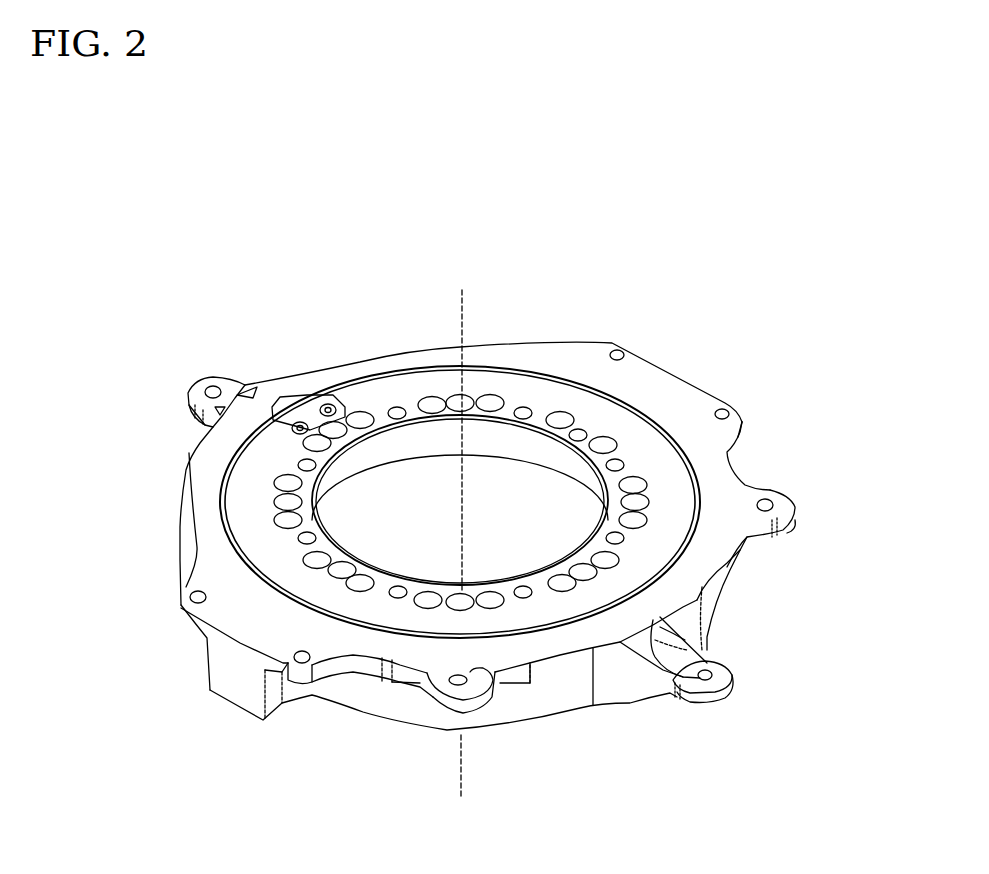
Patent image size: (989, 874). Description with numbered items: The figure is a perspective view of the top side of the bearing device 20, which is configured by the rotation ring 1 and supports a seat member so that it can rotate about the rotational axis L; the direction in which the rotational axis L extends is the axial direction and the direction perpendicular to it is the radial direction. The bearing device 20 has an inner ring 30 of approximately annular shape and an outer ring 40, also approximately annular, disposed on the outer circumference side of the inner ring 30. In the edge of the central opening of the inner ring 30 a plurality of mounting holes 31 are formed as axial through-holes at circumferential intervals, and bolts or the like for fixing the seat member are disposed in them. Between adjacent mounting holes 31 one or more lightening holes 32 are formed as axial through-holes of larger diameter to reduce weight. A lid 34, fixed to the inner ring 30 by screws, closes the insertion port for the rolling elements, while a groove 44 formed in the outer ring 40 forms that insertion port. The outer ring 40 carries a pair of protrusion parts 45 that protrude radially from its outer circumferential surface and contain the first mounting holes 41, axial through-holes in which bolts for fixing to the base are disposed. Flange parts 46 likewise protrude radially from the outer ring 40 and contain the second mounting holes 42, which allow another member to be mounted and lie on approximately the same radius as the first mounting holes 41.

The rotation ring 1 is at (262, 233).
The bearing device 20 is at (404, 312).
The rotational axis L is at (462, 313).
The inner ring 30 is at (523, 370).
The mounting holes 31 is at (578, 433).
The lightening holes 32 is at (602, 445).
The lid 34 is at (299, 395).
The outer ring 40 is at (487, 357).
The first mounting holes 41 is at (215, 392).
The second mounting holes 42 is at (767, 500).
The groove 44 is at (287, 393).
The protrusion parts 45 is at (188, 407).
The flange parts 46 is at (783, 530).